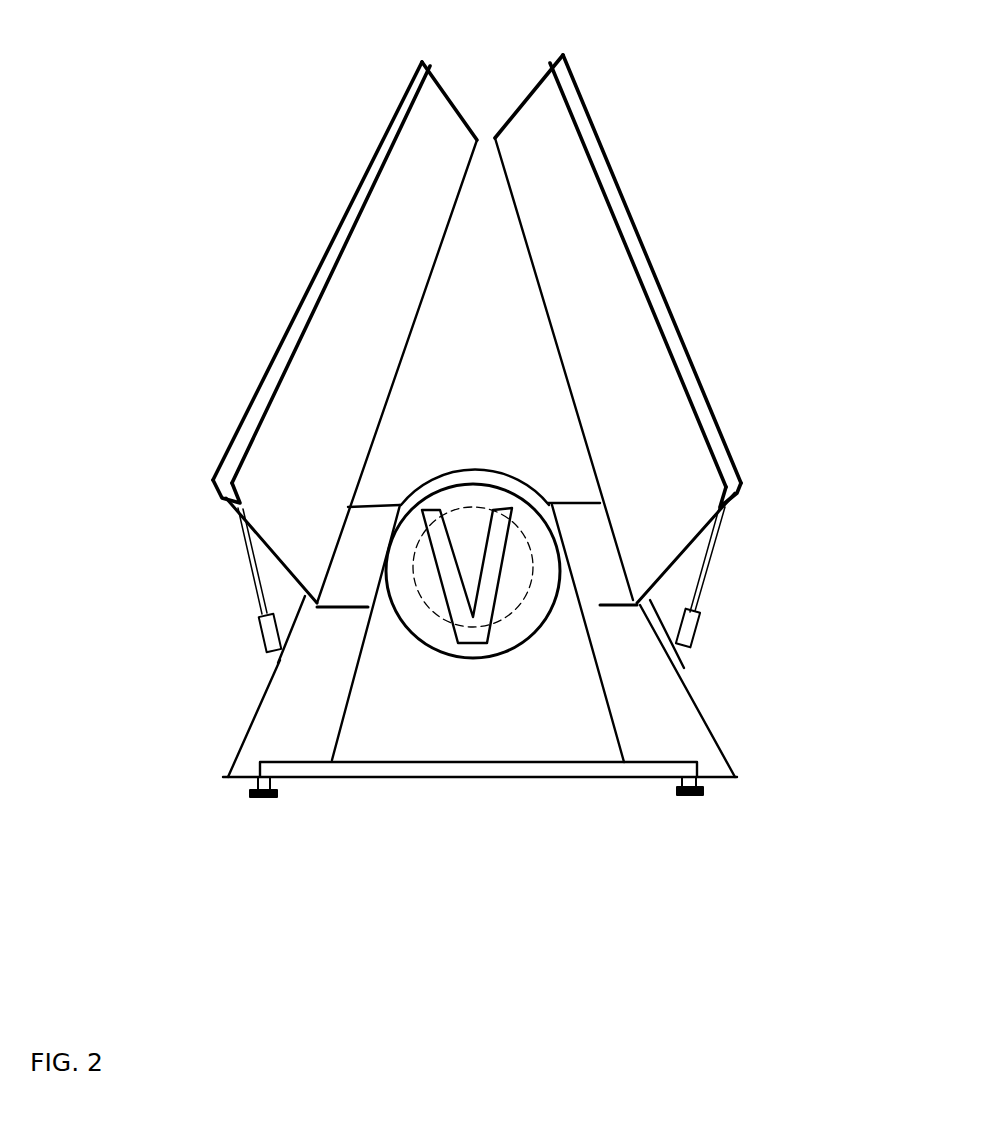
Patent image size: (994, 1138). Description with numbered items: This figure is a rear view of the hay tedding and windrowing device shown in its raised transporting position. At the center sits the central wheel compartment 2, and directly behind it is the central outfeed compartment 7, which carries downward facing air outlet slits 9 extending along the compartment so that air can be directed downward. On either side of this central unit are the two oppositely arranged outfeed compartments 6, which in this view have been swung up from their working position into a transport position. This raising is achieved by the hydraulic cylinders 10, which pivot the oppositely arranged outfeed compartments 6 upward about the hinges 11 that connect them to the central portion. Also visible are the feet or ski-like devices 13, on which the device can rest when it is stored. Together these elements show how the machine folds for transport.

The central wheel compartment 2 is at (363, 507).
The oppositely arranged outfeed compartments 6 is at (417, 200).
The central outfeed compartment 7 is at (417, 680).
The downward facing air outlet slits 9 is at (318, 262).
The hydraulic cylinders 10 is at (258, 632).
The hinges 11 is at (272, 658).
The feet or ski-like devices 13 is at (262, 798).